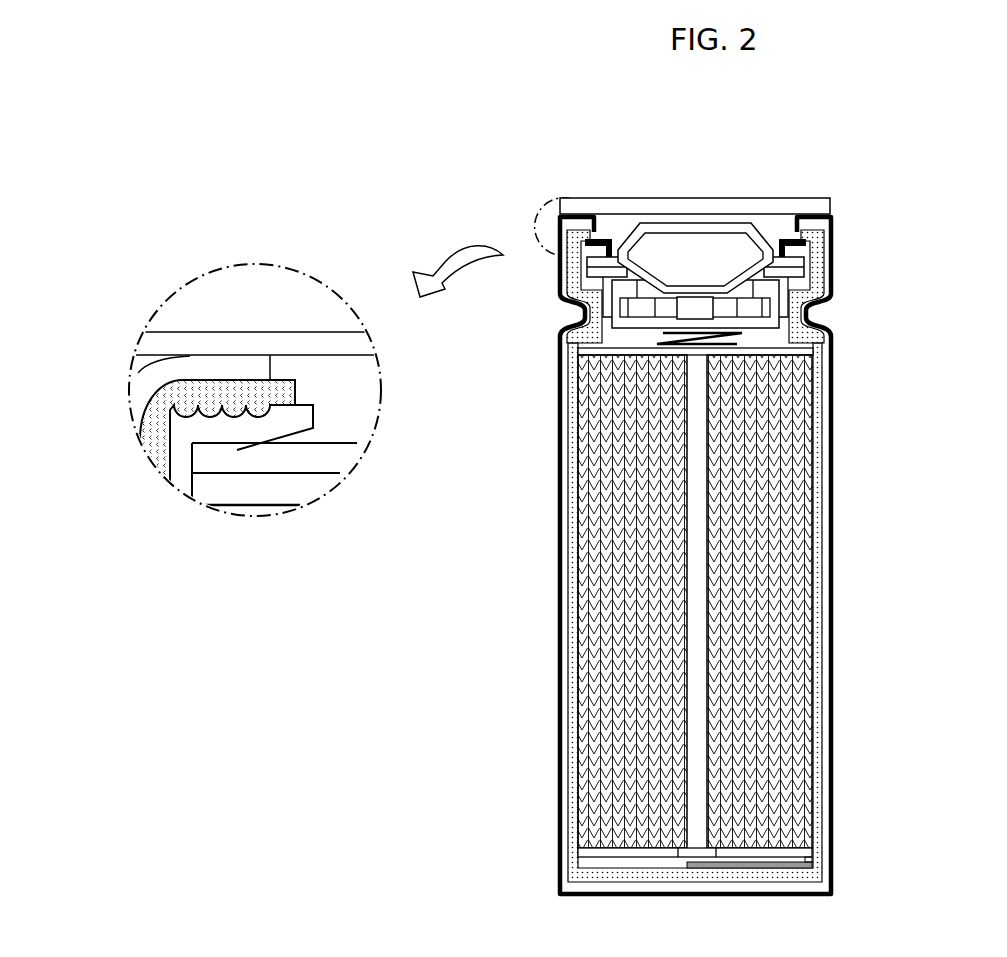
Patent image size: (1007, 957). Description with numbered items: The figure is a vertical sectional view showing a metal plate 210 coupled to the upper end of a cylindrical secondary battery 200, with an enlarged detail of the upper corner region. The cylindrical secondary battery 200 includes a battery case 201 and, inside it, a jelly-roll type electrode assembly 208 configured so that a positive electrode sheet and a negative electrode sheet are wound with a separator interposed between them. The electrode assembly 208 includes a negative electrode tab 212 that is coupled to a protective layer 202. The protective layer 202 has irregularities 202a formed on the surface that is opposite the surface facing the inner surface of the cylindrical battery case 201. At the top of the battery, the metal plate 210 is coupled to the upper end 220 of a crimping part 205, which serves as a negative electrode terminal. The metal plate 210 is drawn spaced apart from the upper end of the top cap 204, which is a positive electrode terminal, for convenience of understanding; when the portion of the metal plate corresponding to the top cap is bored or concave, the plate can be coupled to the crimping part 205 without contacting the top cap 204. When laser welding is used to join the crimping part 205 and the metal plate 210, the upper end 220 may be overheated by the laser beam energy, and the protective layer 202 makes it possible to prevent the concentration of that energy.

The cylindrical secondary battery 200 is at (507, 181).
The battery case 201 is at (833, 465).
The protective layer 202 is at (820, 568).
The irregularities 202a is at (262, 415).
The top cap 204 is at (737, 215).
The crimping part 205 is at (830, 198).
The jelly-roll type electrode assembly 208 is at (871, 678).
The metal plate 210 is at (653, 197).
The negative electrode tab 212 is at (803, 865).
The upper end of the crimping part 220 is at (845, 283).